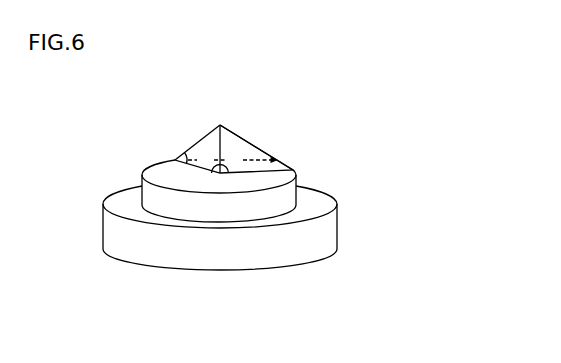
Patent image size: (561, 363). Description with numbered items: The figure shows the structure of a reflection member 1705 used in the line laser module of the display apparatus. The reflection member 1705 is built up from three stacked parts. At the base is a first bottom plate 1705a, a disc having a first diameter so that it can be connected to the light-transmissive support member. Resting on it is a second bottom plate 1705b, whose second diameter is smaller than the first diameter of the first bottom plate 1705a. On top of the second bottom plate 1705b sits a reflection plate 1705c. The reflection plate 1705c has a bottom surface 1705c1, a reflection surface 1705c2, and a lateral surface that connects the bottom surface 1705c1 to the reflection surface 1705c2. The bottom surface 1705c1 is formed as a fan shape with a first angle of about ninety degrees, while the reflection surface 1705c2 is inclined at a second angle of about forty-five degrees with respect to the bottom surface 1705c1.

The reflection member 1705 is at (104, 180).
The first bottom plate 1705a is at (277, 260).
The second bottom plate 1705b is at (280, 207).
The reflection plate 1705c is at (195, 130).
The bottom surface 1705c1 is at (278, 160).
The reflection surface 1705c2 is at (239, 148).